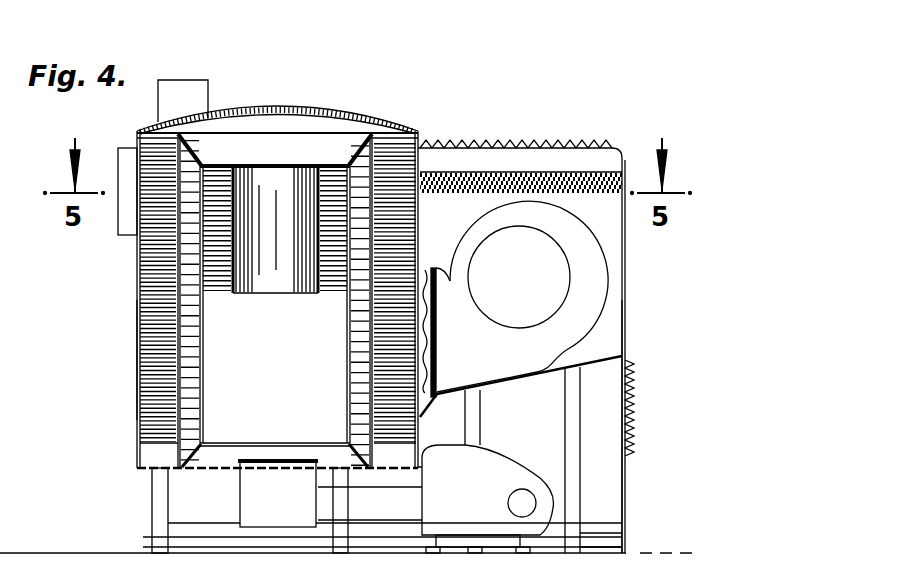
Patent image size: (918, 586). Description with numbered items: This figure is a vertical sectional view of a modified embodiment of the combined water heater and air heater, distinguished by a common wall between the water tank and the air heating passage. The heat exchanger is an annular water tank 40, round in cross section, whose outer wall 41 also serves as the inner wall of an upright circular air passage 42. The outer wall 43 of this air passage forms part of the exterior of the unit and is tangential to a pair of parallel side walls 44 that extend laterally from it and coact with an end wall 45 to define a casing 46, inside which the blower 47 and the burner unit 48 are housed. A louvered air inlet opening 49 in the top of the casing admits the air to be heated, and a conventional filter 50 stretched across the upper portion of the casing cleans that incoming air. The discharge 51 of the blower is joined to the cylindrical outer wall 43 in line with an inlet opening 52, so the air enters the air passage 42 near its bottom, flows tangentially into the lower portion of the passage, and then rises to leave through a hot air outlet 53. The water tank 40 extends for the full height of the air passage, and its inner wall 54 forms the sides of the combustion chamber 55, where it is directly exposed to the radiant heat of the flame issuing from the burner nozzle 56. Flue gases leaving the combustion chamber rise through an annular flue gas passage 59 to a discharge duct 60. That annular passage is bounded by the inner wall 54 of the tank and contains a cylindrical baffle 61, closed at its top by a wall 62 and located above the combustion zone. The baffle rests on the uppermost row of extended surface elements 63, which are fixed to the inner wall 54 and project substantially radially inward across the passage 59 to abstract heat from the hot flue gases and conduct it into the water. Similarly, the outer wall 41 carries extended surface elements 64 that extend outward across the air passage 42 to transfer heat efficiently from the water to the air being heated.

The water tank 40 is at (196, 352).
The outer wall of the water tank 41 is at (186, 390).
The air passage 42 is at (150, 452).
The outer wall of the air passage 43 is at (140, 330).
The side walls 44 is at (538, 414).
The end wall 45 is at (623, 332).
The casing 46 is at (672, 256).
The blower 47 is at (522, 296).
The burner unit 48 is at (487, 499).
The louvered air inlet opening 49 is at (563, 147).
The filter 50 is at (516, 172).
The discharge of the blower 51 is at (437, 328).
The inlet opening 52 is at (428, 370).
The hot air outlet 53 is at (118, 228).
The inner wall of the water tank 54 is at (203, 418).
The combustion chamber 55 is at (301, 423).
The burner nozzle 56 is at (289, 487).
The annular flue gas passage 59 is at (203, 162).
The discharge duct 60 is at (180, 80).
The cylindrical baffle 61 is at (256, 170).
The wall 62 is at (292, 170).
The extended surface elements 63 is at (330, 166).
The extended surface elements 64 is at (137, 393).